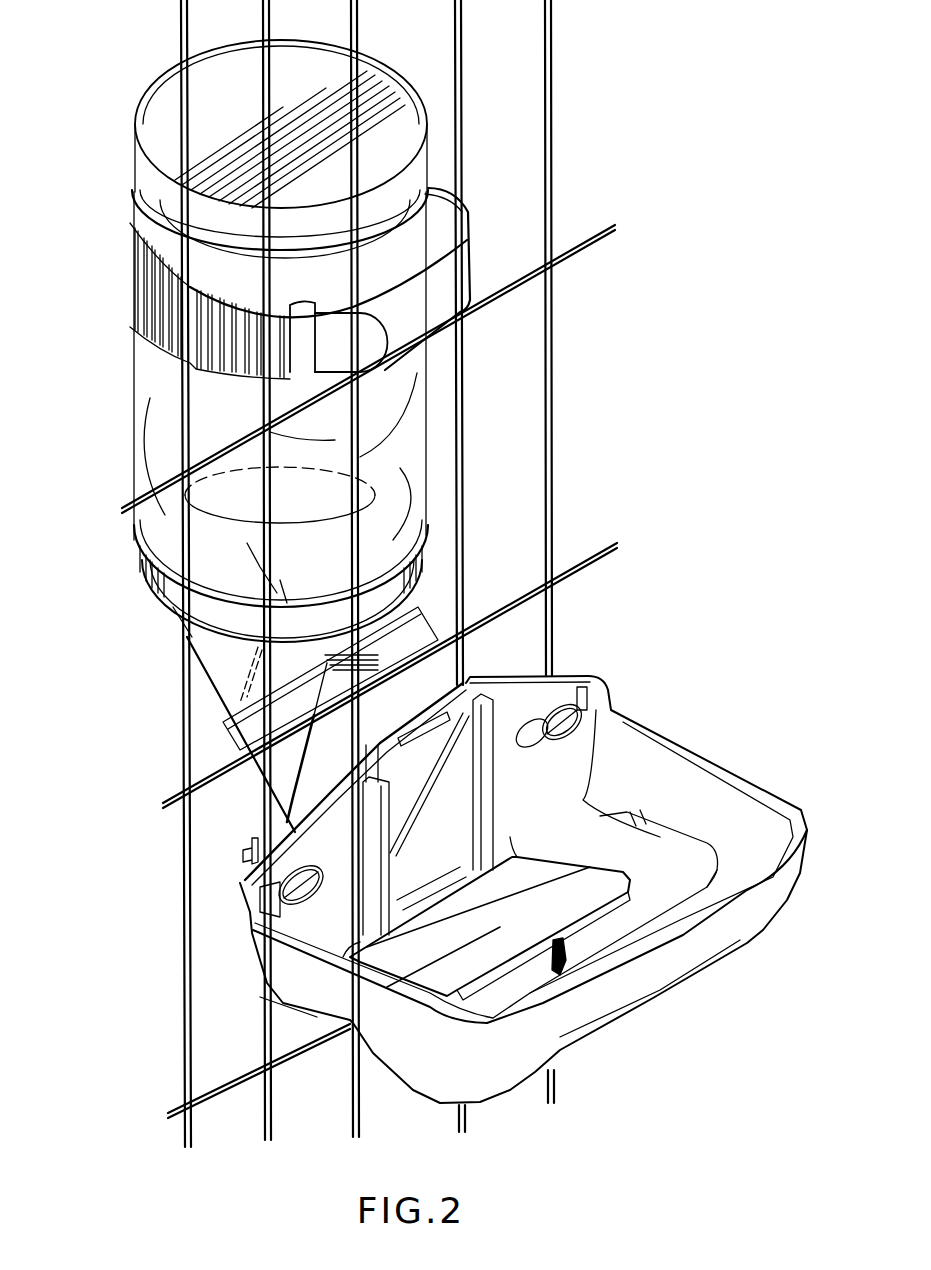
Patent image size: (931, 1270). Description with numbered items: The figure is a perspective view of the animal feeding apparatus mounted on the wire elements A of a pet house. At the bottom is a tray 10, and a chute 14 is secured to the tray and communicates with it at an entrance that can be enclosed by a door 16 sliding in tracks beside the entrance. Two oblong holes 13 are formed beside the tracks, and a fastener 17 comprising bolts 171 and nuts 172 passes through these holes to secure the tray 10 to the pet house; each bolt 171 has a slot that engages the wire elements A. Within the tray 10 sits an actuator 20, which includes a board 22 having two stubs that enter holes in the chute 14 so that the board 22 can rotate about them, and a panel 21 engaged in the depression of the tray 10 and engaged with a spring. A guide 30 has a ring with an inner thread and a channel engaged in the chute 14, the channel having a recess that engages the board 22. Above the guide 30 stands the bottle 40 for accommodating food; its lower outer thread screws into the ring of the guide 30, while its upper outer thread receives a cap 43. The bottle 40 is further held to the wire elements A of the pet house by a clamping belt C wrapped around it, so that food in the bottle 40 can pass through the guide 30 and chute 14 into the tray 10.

The tray 10 is at (792, 812).
The oblong holes 13 is at (581, 686).
The chute 14 is at (250, 730).
The door 16 is at (470, 698).
The screw 17 is at (580, 718).
The actuator 20 is at (530, 843).
The panel 21 is at (603, 847).
The board 22 is at (227, 660).
The guide 30 is at (160, 592).
The bottle 40 is at (150, 400).
The cap 43 is at (402, 113).
The bolts 171 is at (257, 923).
The nuts 172 is at (247, 863).
The wire elements A is at (556, 470).
The clamping belt C is at (148, 283).